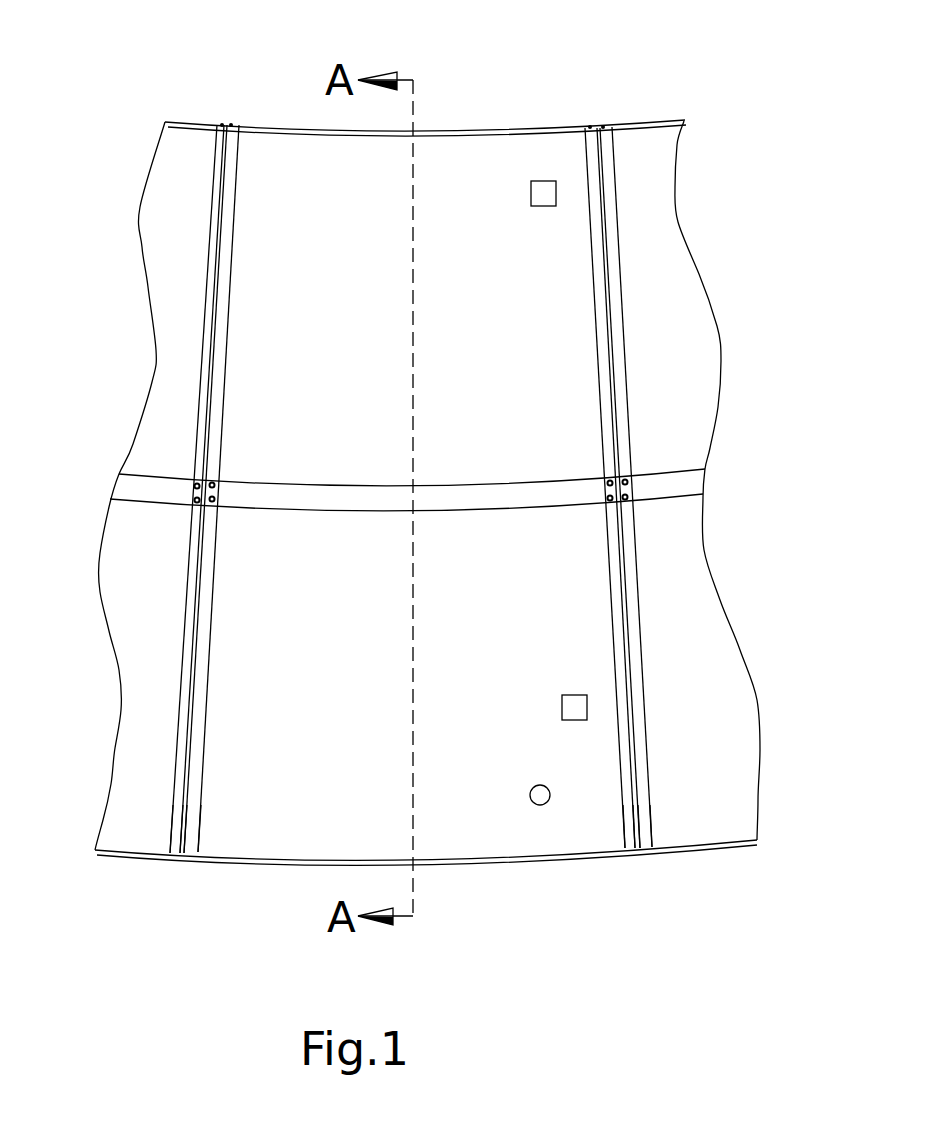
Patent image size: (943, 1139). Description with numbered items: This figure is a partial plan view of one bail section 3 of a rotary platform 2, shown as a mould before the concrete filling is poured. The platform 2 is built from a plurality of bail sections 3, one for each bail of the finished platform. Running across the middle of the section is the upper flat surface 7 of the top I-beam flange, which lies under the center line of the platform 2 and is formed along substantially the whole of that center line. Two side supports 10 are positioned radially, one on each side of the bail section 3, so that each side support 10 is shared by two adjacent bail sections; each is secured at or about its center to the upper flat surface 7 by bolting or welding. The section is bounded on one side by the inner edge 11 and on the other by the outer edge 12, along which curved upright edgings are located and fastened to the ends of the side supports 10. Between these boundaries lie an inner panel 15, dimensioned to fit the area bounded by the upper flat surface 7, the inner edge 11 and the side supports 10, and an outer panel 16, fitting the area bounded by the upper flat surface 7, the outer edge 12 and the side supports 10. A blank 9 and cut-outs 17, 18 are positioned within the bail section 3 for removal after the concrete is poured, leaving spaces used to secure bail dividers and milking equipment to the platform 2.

The platform 2 is at (181, 88).
The bail section 3 is at (467, 152).
The upper flat surface 7 is at (672, 483).
The blank 9 is at (557, 193).
The side support 10 is at (173, 837).
The inner edge 11 is at (550, 131).
The outer edge 12 is at (459, 865).
The inner panel 15 is at (543, 294).
The outer panel 16 is at (250, 749).
The cut-out 17 is at (549, 793).
The cut-out 18 is at (575, 709).